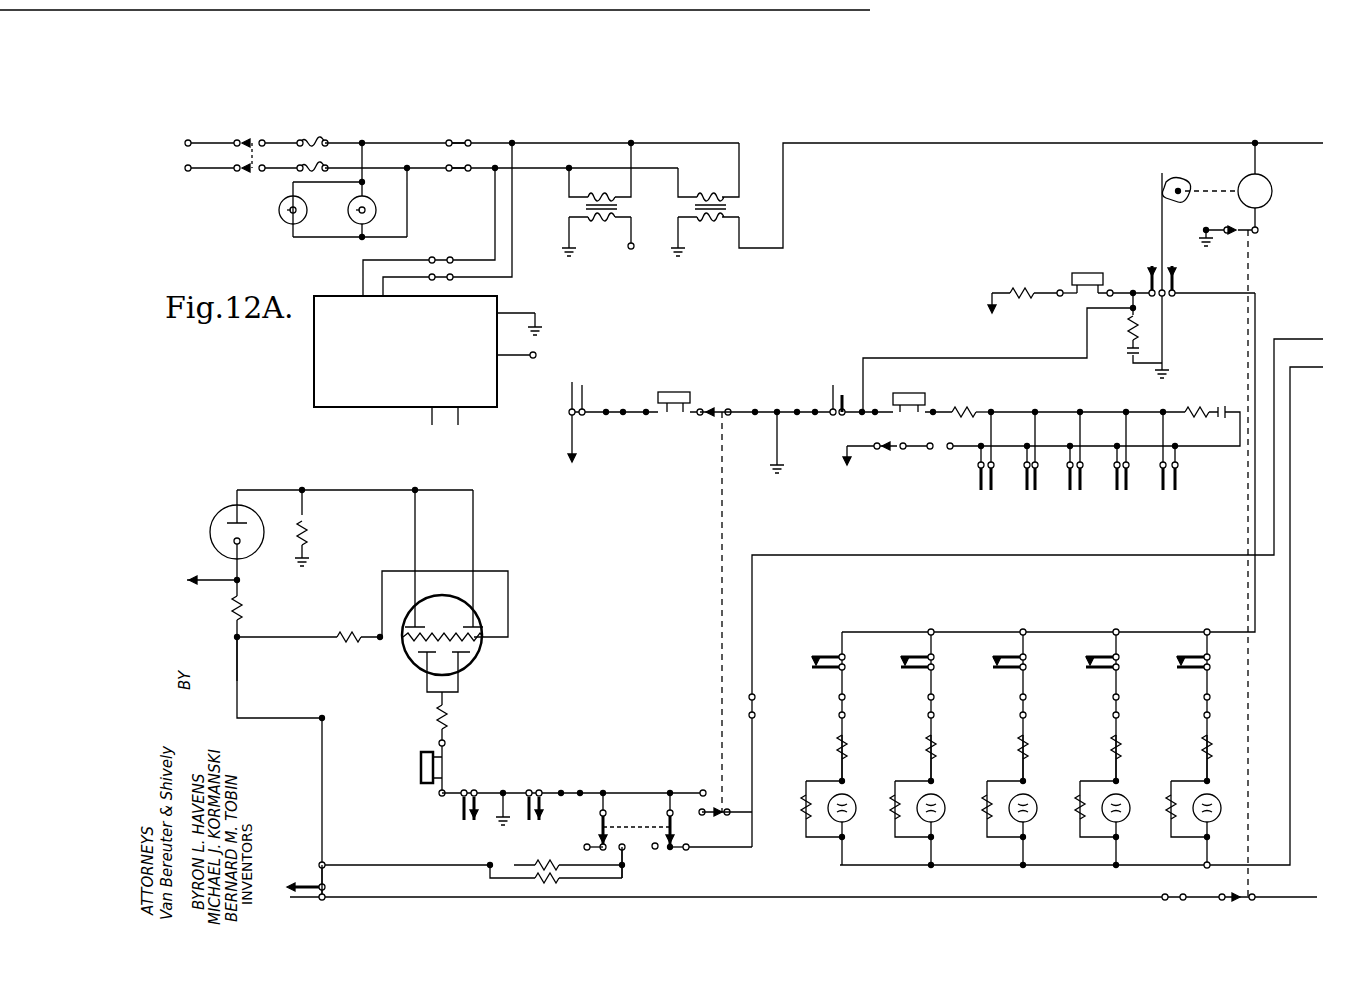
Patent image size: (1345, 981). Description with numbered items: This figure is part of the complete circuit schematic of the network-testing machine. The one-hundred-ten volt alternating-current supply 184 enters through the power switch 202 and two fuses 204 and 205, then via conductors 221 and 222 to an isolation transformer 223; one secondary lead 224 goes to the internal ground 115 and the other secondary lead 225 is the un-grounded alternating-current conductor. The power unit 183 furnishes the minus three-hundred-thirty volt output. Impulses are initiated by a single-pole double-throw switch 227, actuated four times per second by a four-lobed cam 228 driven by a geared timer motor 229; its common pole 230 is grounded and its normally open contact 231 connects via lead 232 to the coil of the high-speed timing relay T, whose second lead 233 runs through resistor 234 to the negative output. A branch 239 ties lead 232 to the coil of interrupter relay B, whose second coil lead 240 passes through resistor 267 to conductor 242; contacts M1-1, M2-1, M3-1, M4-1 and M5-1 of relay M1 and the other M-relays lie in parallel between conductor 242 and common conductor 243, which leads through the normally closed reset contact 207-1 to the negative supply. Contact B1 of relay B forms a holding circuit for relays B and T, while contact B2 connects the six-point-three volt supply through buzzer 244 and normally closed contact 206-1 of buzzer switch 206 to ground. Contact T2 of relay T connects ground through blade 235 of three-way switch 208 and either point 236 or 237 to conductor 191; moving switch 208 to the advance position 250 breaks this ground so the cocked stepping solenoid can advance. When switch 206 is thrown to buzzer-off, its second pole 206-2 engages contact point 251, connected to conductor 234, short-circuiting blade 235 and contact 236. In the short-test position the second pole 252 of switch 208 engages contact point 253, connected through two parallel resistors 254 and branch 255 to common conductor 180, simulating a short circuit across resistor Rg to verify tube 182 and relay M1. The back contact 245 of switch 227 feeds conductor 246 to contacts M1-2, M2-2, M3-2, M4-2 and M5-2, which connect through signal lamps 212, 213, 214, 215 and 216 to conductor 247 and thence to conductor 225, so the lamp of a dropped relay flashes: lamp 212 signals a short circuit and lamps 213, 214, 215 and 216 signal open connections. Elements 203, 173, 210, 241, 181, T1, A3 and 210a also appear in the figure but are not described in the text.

The 110 volt A.C. current supply 184 is at (185, 172).
The power switch 202 is at (252, 170).
The fuse 204 is at (318, 138).
The fuse 205 is at (322, 163).
The pilot lamp 203 is at (372, 205).
The advance position 250 is at (283, 220).
The power unit 183 is at (314, 378).
The internal ground 115 is at (543, 334).
The conductor 221 is at (600, 131).
The conductor 222 is at (545, 168).
The filament transformer 173 is at (603, 220).
The secondary lead 224 is at (678, 238).
The isolation transformer 223 is at (730, 207).
The secondary lead 225 is at (875, 148).
The four-lobed cam 228 is at (1180, 177).
The geared timer motor 229 is at (1288, 195).
The motor switch 210 is at (1236, 235).
The common pole 230 is at (1158, 226).
The normally open contact 231 is at (1150, 262).
The back contact 245 is at (1176, 270).
The single-pole double-throw switch 227 is at (1166, 296).
The high-speed timing relay T is at (1085, 270).
The resistor 267 is at (1020, 290).
The second lead 233 is at (1058, 290).
The lead 232 is at (1112, 290).
The conductor 246 is at (1225, 305).
The branch 239 is at (1060, 332).
The conductor 191 is at (1310, 339).
The conductor 247 is at (1314, 364).
The normally open contact B2 is at (595, 374).
The buzzer 244 is at (674, 405).
The normally closed contact 206-1 is at (718, 408).
The buzzer switch 206 is at (722, 525).
The normally open contact B1 is at (848, 380).
The interrupter relay B is at (928, 382).
The second coil lead 240 is at (937, 408).
The resistor 241 is at (975, 396).
The conductor 242 is at (1060, 408).
The normally closed contact 207-1 is at (893, 443).
The common conductor 243 is at (955, 448).
The contact of relay M1 M1-1 is at (978, 488).
The contact of relay M2 M2-1 is at (1030, 492).
The contact of relay M3 M3-1 is at (1074, 492).
The contact of relay M4 M4-1 is at (1120, 492).
The contact of relay M5 M5-1 is at (1178, 490).
The resistor Rg is at (243, 610).
The vacuum tube 181 is at (410, 650).
The tube 182 is at (480, 653).
The relay M1 is at (436, 765).
The relay contact T1 is at (460, 812).
The normally open contact T2 is at (545, 812).
The resistor 234 is at (614, 778).
The second pole 252 is at (598, 828).
The blade 235 is at (662, 823).
The contact point 251 is at (709, 776).
The three-way switch 208 is at (625, 840).
The central contact 236 is at (680, 852).
The contact point 237 is at (690, 850).
The second pole 206-2 is at (718, 817).
The branch 255 is at (395, 860).
The parallel resistors 254 is at (562, 850).
The contact point 253 is at (573, 885).
The contact A3 is at (285, 890).
The common conductor 180 is at (340, 735).
The switch contact 210a is at (1233, 895).
The contact of relay M1 M1-2 is at (808, 662).
The contact of relay M2 M2-2 is at (900, 670).
The contact of relay M3 M3-2 is at (993, 670).
The contact of relay M4 M4-2 is at (1086, 670).
The contact of relay M5 M5-2 is at (1177, 670).
The signal lamp 212 is at (856, 808).
The signal lamp 213 is at (945, 808).
The signal lamp 214 is at (1037, 808).
The signal lamp 215 is at (1130, 808).
The signal lamp 216 is at (1221, 808).